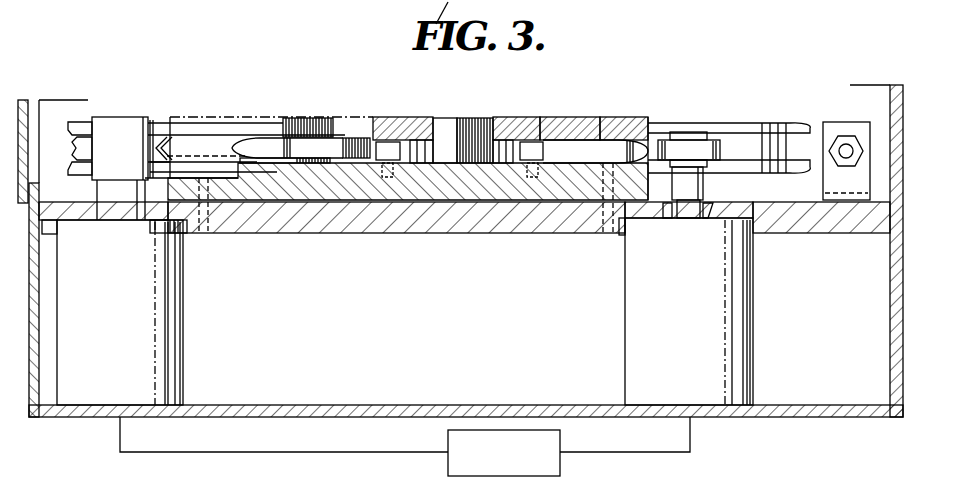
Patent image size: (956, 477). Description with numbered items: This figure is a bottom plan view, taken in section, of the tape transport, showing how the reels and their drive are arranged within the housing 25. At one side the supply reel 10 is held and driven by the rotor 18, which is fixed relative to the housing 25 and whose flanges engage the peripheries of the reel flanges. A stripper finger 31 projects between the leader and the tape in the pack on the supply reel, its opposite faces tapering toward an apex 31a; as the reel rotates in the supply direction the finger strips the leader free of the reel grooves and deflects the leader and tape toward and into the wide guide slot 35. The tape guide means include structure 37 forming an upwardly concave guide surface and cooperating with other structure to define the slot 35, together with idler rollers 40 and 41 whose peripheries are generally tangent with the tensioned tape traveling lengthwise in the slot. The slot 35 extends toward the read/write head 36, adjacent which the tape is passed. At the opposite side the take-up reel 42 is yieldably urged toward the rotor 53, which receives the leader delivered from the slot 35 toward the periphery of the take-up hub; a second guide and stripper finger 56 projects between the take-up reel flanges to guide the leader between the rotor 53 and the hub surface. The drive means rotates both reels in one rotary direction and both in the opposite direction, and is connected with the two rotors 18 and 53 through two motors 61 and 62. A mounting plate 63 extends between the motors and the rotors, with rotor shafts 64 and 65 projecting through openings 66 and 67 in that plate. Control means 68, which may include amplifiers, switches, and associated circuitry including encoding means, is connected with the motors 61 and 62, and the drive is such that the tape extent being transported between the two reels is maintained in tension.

The supply reel 10 is at (183, 114).
The rotor 18 is at (112, 106).
The housing 25 is at (867, 425).
The stripper finger 31 is at (292, 138).
The apex 31a is at (234, 146).
The guide slot 35 is at (573, 140).
The read/write head 36 is at (444, 135).
The structure forming guide surface 37 is at (425, 188).
The idler roller 40 is at (396, 150).
The idler roller 41 is at (530, 150).
The take-up reel 42 is at (783, 116).
The rotor 53 is at (701, 120).
The second guide and stripper finger 56 is at (615, 143).
The motor 61 is at (148, 352).
The motor 62 is at (718, 325).
The mounting plate 63 is at (313, 220).
The rotor shaft 64 is at (110, 206).
The rotor shaft 65 is at (687, 216).
The opening 66 is at (133, 205).
The opening 67 is at (710, 214).
The control means 68 is at (507, 430).